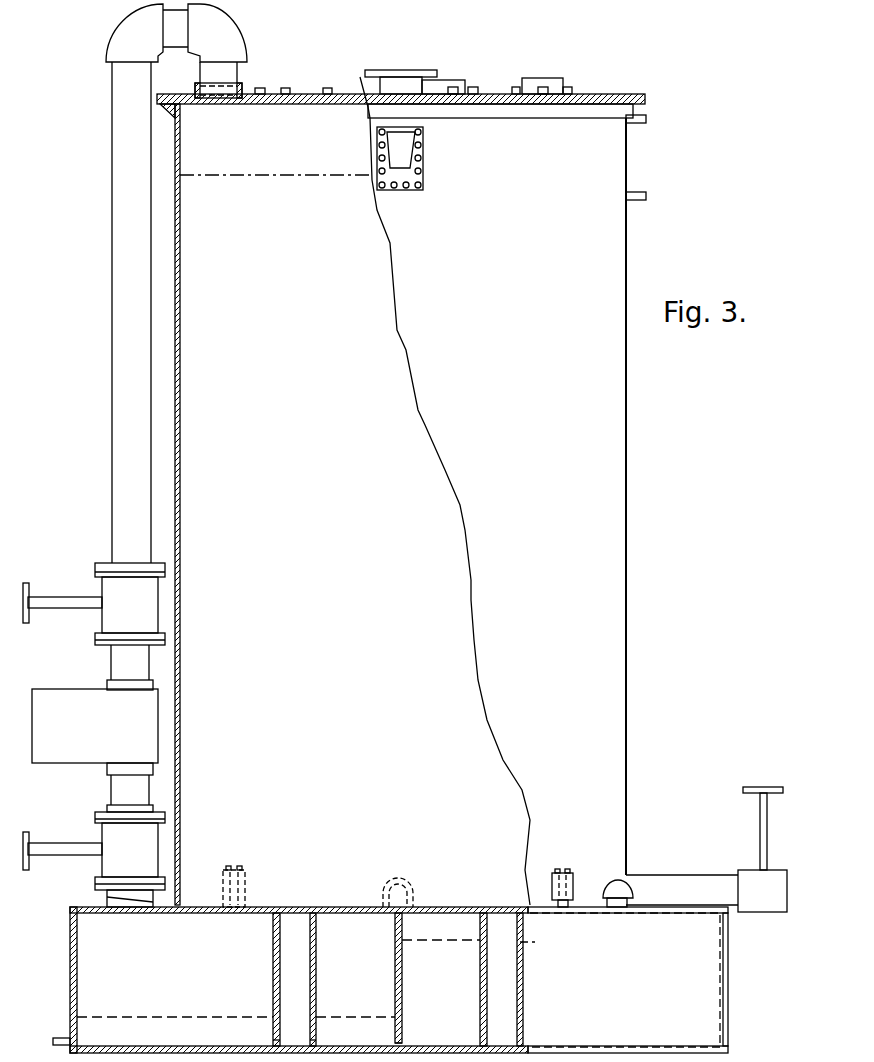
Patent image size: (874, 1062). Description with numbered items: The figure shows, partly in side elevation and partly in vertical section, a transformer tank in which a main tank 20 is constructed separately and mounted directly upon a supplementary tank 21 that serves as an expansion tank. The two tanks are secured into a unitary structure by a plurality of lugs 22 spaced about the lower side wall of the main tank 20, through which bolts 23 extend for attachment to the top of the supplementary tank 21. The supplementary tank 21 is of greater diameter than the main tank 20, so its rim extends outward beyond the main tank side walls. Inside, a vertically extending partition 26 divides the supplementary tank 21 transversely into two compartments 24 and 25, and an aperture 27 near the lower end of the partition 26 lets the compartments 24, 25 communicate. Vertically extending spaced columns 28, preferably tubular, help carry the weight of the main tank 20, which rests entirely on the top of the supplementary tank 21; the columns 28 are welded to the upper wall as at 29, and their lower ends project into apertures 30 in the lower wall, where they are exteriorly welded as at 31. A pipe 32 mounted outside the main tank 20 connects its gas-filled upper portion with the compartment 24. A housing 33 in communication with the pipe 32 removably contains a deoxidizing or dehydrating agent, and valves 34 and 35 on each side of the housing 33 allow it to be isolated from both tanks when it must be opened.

The main tank 20 is at (613, 507).
The supplementary tank 21 is at (700, 985).
The lugs 22 is at (573, 880).
The bolts 23 is at (561, 871).
The compartment 24 is at (203, 963).
The compartment 25 is at (452, 1001).
The partition 26 is at (398, 997).
The aperture 27 is at (401, 1044).
The columns 28 is at (290, 956).
The weld 29 is at (318, 915).
The apertures 30 is at (273, 1044).
The weld 31 is at (316, 1046).
The pipe 32 is at (120, 463).
The housing 33 is at (77, 752).
The valve 34 is at (118, 612).
The valve 35 is at (113, 843).